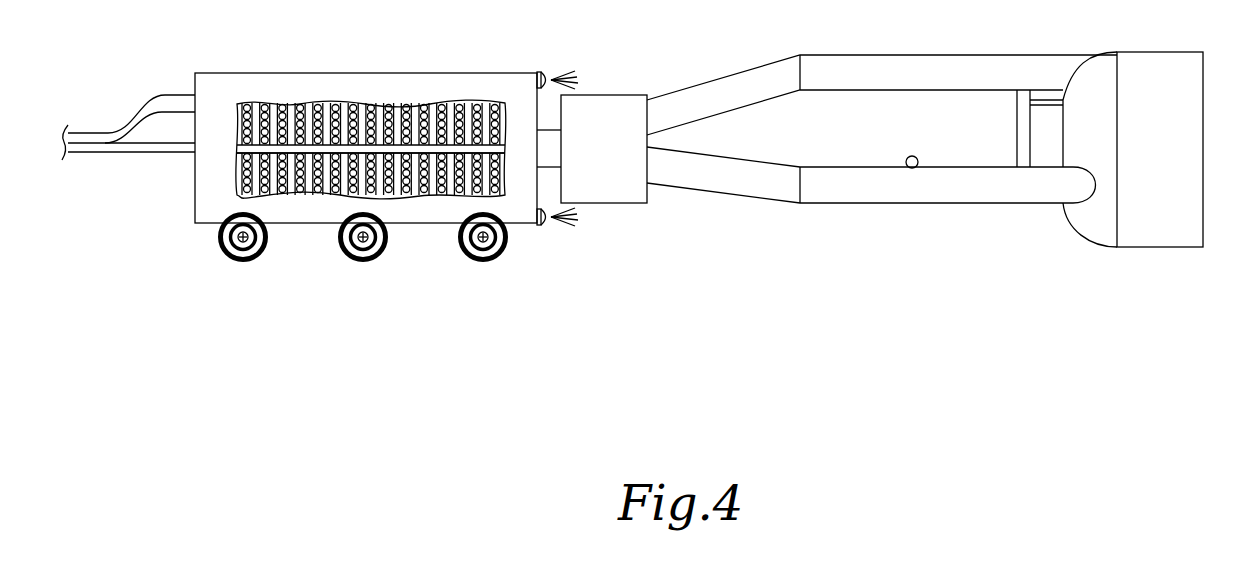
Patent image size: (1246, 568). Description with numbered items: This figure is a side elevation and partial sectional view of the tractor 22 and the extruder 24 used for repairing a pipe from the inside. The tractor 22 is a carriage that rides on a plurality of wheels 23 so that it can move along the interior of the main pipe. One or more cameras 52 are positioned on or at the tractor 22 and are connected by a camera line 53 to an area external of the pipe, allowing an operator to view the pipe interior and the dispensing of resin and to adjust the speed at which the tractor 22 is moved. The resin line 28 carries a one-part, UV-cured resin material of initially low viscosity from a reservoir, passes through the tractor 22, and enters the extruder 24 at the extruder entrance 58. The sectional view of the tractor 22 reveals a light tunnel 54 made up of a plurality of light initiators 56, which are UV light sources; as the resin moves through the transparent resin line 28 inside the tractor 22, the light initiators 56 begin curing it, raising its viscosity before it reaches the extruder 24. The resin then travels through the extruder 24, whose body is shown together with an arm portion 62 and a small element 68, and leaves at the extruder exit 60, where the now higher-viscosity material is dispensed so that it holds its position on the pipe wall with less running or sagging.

The tractor 22 is at (233, 52).
The wheels 23 is at (230, 254).
The extruder 24 is at (1000, 30).
The resin line 28 is at (132, 156).
The cameras 52 is at (553, 78).
The camera line 53 is at (135, 115).
The light tunnel 54 is at (425, 195).
The light initiators 56 is at (380, 118).
The extruder entrance 58 is at (632, 203).
The extruder exit 60 is at (1188, 248).
The lower arm 62 is at (905, 208).
The ball 68 is at (907, 157).